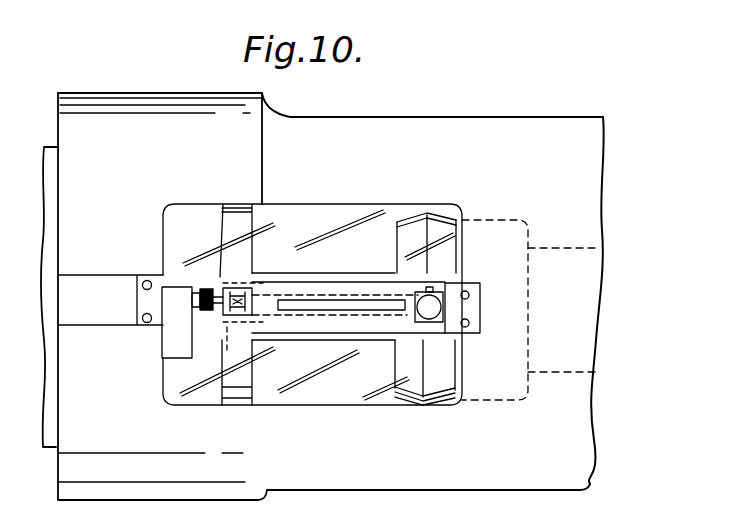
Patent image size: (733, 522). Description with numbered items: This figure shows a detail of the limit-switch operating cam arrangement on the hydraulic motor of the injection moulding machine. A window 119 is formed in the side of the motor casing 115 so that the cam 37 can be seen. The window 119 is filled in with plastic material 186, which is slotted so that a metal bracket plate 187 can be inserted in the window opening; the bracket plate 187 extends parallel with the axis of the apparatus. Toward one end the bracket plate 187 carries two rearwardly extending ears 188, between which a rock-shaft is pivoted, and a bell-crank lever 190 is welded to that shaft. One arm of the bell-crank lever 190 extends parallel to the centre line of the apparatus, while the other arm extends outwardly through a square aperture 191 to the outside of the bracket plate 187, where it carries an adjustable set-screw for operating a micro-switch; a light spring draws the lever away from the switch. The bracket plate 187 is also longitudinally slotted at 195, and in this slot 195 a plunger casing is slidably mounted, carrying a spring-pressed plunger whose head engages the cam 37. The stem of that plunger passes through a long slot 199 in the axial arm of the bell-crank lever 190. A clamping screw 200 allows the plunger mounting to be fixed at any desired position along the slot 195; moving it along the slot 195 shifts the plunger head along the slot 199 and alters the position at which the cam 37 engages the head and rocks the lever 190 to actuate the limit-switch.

The motor casing 115 is at (482, 132).
The window 119 is at (325, 217).
The square aperture 191 is at (242, 287).
The longitudinal slot 195 is at (338, 296).
The ears 188 is at (215, 235).
The bracket plate 187 is at (198, 320).
The bell-crank lever 190 is at (235, 315).
The clamping screw 200 is at (431, 300).
The cam 37 is at (438, 382).
The plastic material 186 is at (337, 342).
The long slot 199 is at (352, 317).